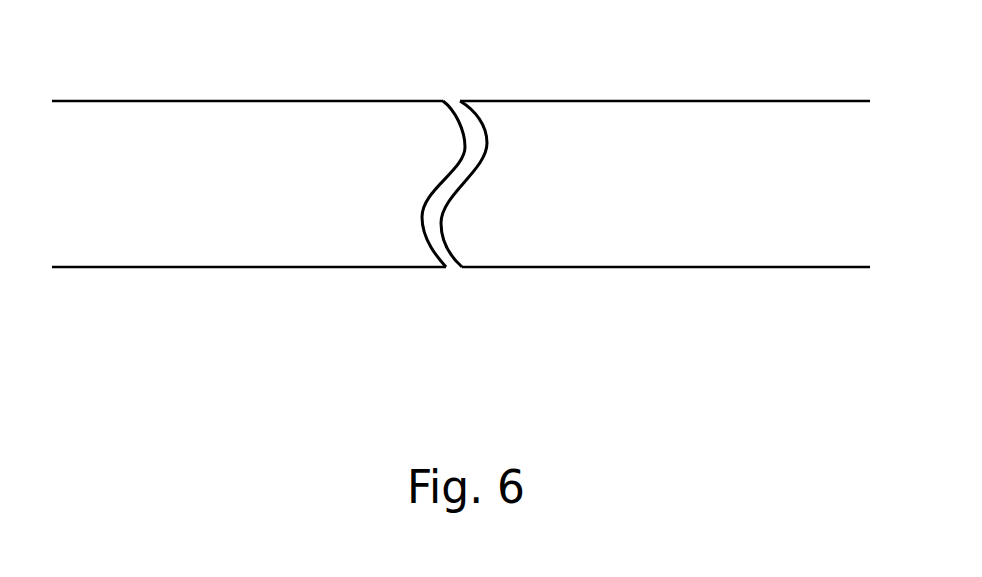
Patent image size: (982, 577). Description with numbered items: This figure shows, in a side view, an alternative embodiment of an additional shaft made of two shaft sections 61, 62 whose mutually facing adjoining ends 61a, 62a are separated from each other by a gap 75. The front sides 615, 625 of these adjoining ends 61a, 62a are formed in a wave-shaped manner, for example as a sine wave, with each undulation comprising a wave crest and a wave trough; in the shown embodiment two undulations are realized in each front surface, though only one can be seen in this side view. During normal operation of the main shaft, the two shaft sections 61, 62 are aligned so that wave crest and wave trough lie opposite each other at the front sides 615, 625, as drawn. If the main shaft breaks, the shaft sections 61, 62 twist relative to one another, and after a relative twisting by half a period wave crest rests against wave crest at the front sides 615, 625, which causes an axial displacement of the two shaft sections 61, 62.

The shaft section 61 is at (248, 268).
The shaft section 62 is at (698, 268).
The adjoining end 61a is at (455, 120).
The adjoining end 62a is at (448, 235).
The gap 75 is at (452, 100).
The front side 625 is at (476, 163).
The front side 615 is at (426, 218).